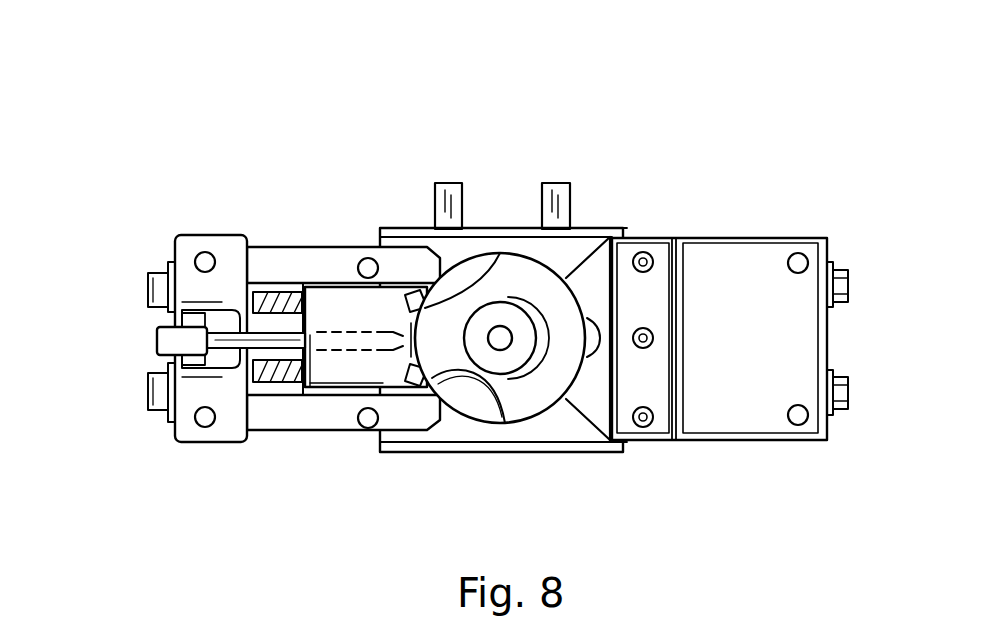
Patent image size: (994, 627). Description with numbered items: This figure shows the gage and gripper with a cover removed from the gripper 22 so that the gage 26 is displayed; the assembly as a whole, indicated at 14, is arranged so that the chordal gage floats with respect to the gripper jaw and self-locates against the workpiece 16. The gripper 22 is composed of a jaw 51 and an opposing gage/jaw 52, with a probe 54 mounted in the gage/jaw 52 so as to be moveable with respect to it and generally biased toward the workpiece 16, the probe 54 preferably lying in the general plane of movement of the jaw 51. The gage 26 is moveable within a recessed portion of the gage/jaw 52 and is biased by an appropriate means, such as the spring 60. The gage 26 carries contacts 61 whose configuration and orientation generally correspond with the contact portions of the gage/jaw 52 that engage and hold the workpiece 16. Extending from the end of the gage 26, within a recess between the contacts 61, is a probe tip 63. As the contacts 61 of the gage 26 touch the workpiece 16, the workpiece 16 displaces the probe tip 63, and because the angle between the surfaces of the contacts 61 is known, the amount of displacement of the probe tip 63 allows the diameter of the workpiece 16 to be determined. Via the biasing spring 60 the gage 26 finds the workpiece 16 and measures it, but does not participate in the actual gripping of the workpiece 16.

The valve actuator assembly 14 is at (632, 97).
The workpiece 16 is at (507, 273).
The gripper 22 is at (483, 452).
The gage 26 is at (333, 307).
The jaw 51 is at (593, 423).
The gage/jaw 52 is at (306, 265).
The probe 54 is at (152, 340).
The spring 60 is at (283, 297).
The contacts 61 is at (487, 270).
The probe tip 63 is at (415, 342).